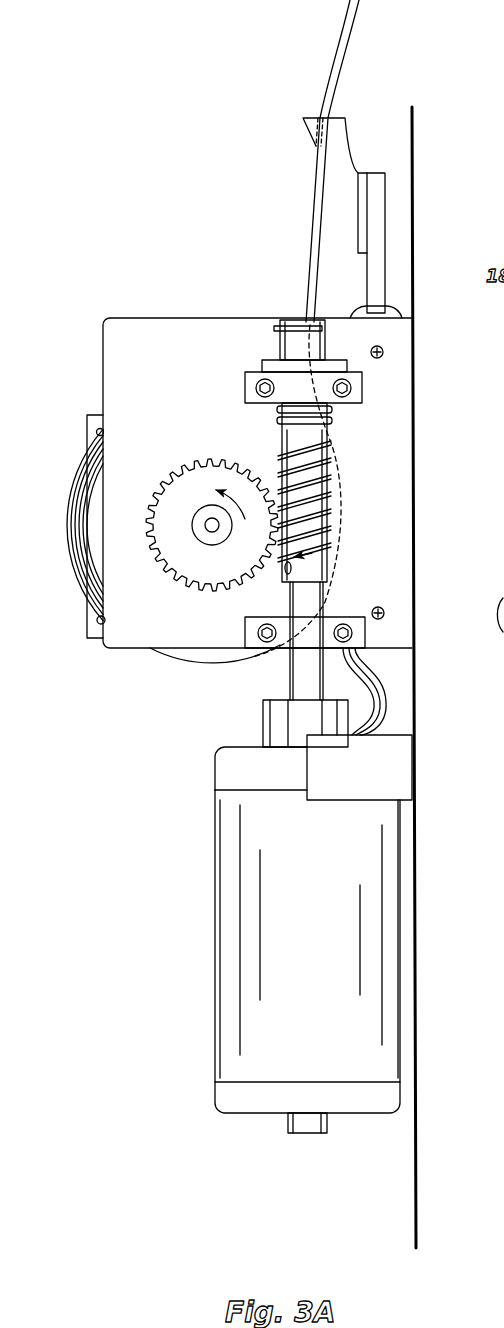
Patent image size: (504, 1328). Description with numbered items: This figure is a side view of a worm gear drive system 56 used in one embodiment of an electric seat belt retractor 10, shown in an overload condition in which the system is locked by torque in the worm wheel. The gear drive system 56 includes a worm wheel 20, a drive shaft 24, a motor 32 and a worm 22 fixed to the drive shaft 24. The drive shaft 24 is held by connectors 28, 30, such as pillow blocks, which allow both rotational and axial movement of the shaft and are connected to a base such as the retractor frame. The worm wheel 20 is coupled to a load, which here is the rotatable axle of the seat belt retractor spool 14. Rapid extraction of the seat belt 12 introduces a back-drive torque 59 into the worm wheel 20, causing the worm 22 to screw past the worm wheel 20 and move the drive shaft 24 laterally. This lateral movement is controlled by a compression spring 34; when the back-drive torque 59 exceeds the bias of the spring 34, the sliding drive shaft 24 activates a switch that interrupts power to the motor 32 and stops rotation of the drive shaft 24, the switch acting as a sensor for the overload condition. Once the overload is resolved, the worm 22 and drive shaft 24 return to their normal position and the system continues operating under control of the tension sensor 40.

The cable actuator assembly 10 is at (142, 212).
The seat belt 12 is at (337, 42).
The seat belt retractor spool 14 is at (79, 593).
The worm wheel 20 is at (195, 571).
The worm 22 is at (330, 514).
The drive shaft 24 is at (302, 682).
The connector 28 is at (362, 388).
The connector 30 is at (350, 612).
The motor 32 is at (320, 943).
The compression spring 34 is at (329, 442).
The tension sensor 40 is at (399, 198).
The gear drive system 56 is at (150, 441).
The back-drive torque 59 is at (236, 492).